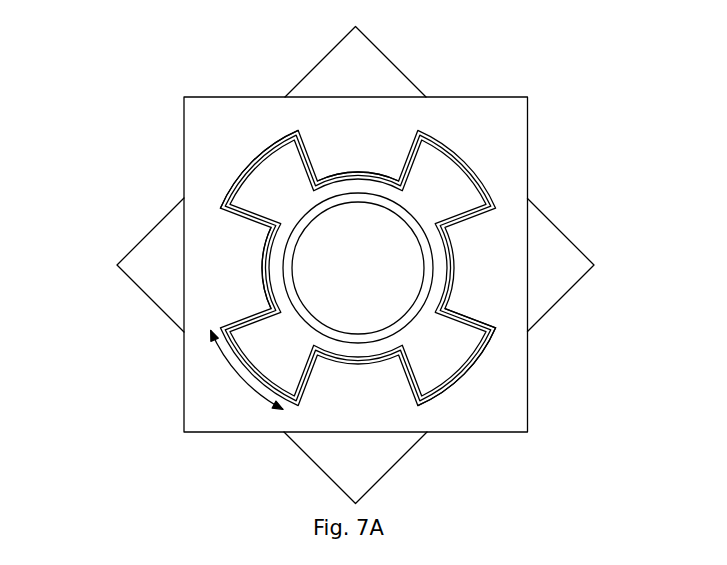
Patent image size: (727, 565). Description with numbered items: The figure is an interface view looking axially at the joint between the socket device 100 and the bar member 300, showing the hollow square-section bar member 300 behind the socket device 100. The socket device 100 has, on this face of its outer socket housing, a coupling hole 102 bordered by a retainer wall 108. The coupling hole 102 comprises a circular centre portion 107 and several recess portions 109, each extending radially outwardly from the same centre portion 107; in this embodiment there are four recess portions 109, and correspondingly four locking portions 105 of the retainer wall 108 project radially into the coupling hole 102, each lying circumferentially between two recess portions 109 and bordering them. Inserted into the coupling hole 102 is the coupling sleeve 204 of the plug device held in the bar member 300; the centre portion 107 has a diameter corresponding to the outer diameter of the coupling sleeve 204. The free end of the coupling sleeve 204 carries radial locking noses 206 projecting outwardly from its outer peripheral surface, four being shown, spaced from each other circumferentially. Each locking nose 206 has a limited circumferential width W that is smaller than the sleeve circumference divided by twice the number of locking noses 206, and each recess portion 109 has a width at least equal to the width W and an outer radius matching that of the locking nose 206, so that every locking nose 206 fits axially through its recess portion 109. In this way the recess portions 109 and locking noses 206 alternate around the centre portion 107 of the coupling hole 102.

The socket device 100 is at (505, 173).
The coupling hole 102 is at (440, 143).
The locking portion 105 is at (233, 267).
The centre portion 107 is at (405, 255).
The retainer wall 108 is at (233, 153).
The recess portion 109 is at (497, 322).
The coupling sleeve 204 is at (363, 188).
The locking nose 206 is at (447, 348).
The bar member 300 is at (550, 233).
The circumferential width W is at (241, 375).